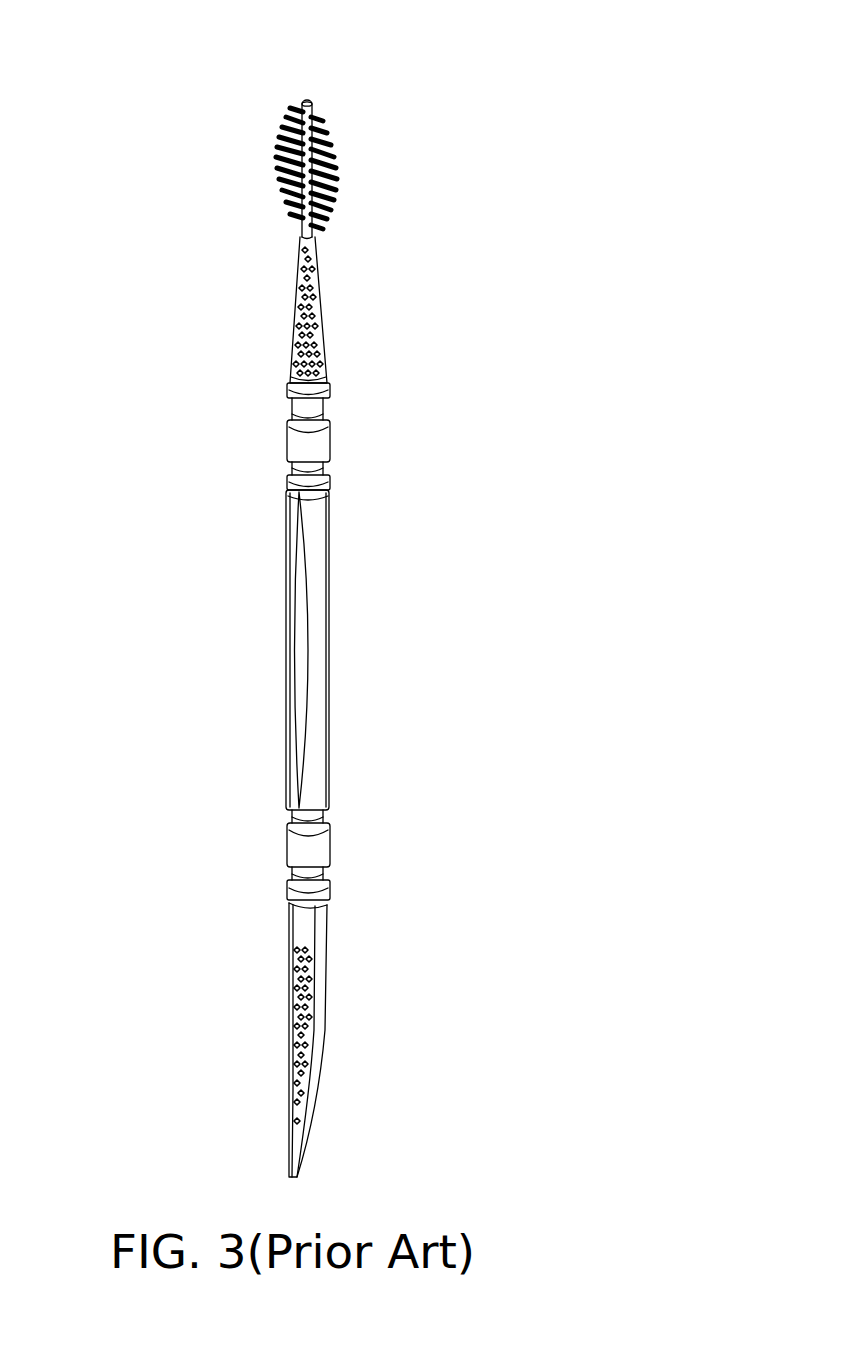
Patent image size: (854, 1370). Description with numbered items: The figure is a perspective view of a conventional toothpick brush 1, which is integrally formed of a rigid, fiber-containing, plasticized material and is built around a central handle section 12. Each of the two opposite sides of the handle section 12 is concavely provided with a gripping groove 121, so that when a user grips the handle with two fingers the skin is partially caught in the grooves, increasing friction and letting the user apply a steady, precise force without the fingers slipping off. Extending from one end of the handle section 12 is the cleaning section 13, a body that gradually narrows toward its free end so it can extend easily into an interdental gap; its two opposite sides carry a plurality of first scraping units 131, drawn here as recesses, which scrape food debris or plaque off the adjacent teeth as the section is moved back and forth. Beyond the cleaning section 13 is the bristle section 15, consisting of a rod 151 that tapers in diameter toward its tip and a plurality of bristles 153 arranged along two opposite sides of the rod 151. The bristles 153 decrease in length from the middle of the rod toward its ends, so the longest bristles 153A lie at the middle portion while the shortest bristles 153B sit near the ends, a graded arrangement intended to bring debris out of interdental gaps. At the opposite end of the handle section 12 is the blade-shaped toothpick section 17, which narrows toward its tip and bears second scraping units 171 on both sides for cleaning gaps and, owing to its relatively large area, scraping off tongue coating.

The toothpick brush 1 is at (92, 185).
The handle section 12 is at (332, 617).
The gripping groove 121 is at (302, 653).
The cleaning section 13 is at (333, 333).
The first scraping units 131 is at (296, 306).
The bristle section 15 is at (420, 75).
The rod 151 is at (308, 98).
The bristles 153 is at (418, 100).
The longest bristles 153A is at (338, 174).
The shortest bristles 153B is at (330, 116).
The toothpick section 17 is at (328, 991).
The second scraping units 171 is at (294, 1022).